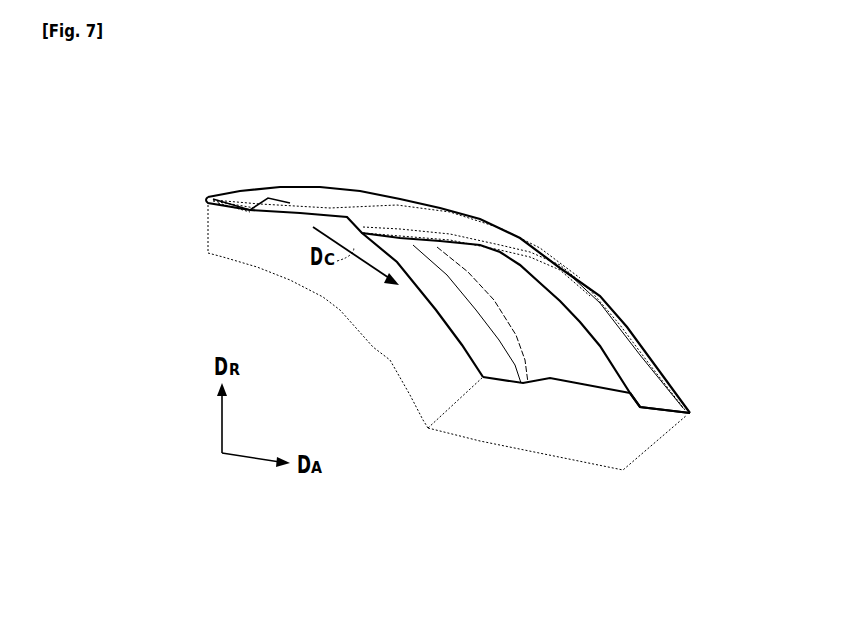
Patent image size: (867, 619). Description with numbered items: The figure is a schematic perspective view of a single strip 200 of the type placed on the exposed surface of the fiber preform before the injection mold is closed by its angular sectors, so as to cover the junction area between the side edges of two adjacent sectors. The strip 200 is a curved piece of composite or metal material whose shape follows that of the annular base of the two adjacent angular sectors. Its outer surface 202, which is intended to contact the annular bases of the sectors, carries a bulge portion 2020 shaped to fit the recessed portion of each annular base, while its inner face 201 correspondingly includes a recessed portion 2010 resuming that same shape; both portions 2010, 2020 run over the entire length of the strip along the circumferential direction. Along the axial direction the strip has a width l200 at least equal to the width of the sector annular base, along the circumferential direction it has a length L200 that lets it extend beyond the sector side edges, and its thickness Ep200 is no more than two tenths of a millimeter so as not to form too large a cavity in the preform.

The strip 200 is at (468, 295).
The inner face 201 is at (665, 393).
The outer surface 202 is at (250, 208).
The recessed portion 2010 is at (577, 374).
The bulge portion 2020 is at (345, 198).
The thickness Ep200 is at (605, 318).
The length L200 is at (338, 309).
The width l200 is at (523, 450).